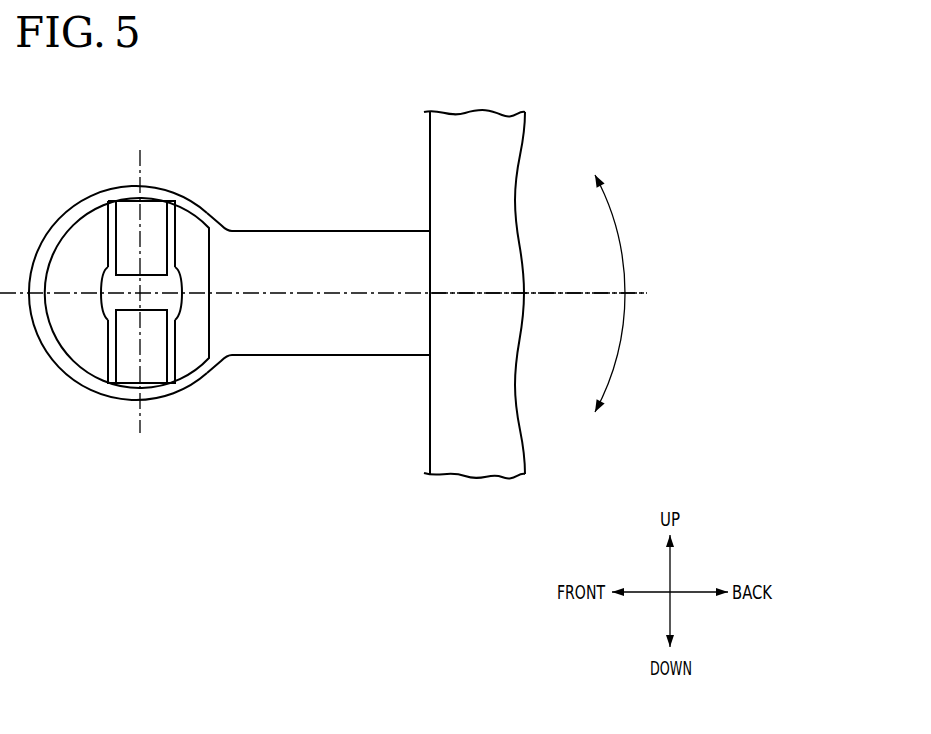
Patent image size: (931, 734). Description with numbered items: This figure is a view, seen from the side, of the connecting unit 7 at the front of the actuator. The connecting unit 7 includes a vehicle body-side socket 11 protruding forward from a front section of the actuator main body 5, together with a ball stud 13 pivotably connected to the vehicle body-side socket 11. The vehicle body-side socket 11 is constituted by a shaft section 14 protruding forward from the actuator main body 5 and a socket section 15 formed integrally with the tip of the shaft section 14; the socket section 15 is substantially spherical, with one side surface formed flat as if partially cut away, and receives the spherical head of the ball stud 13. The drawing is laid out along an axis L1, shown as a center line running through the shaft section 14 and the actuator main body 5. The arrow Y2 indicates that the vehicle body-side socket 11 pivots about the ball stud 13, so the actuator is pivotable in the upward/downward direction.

The actuator main body 5 is at (477, 447).
The connecting unit 7 is at (343, 217).
The vehicle body-side socket 11 is at (287, 120).
The ball stud 13 is at (215, 385).
The shaft section 14 is at (288, 230).
The socket section 15 is at (195, 205).
The axis line L1 is at (563, 293).
The arrow indicating pivoting of the vehicle body-side socket Y2 is at (623, 249).